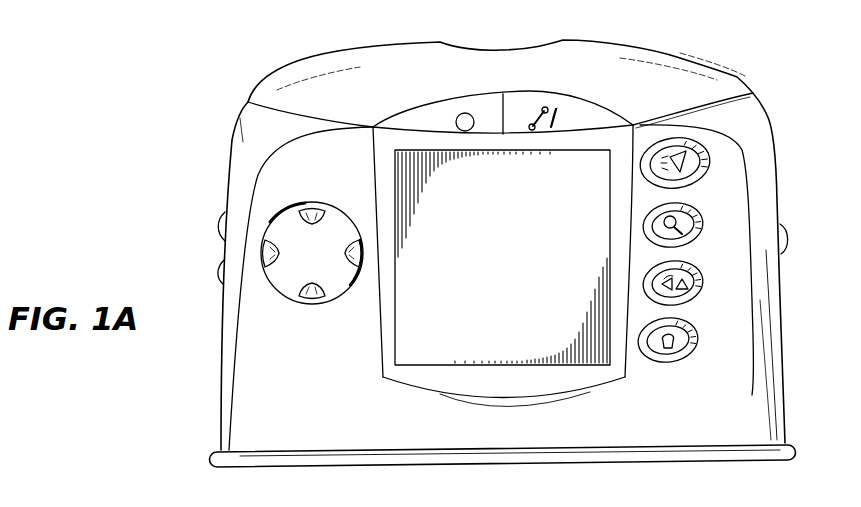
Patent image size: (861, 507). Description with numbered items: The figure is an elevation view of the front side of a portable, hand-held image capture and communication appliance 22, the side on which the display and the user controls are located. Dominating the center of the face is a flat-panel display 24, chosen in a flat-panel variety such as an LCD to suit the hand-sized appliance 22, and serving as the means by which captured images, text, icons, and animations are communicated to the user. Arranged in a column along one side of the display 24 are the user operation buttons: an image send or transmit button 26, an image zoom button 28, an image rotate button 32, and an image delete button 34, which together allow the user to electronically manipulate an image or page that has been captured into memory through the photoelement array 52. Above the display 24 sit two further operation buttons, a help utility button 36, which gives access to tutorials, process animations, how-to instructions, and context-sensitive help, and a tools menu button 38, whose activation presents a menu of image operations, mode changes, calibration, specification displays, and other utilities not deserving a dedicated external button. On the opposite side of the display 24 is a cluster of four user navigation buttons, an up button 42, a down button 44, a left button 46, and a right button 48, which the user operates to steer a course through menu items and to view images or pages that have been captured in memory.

The image capture and communication appliance 22 is at (697, 36).
The flat-panel display 24 is at (432, 213).
The image send button 26 is at (705, 160).
The image zoom button 28 is at (695, 226).
The image rotate button 32 is at (690, 283).
The image delete button 34 is at (695, 338).
The help utility button 36 is at (465, 112).
The tools menu button 38 is at (527, 113).
The up button 42 is at (298, 210).
The down button 44 is at (308, 293).
The left button 46 is at (260, 253).
The right button 48 is at (346, 260).
The photoelement array 52 is at (260, 457).